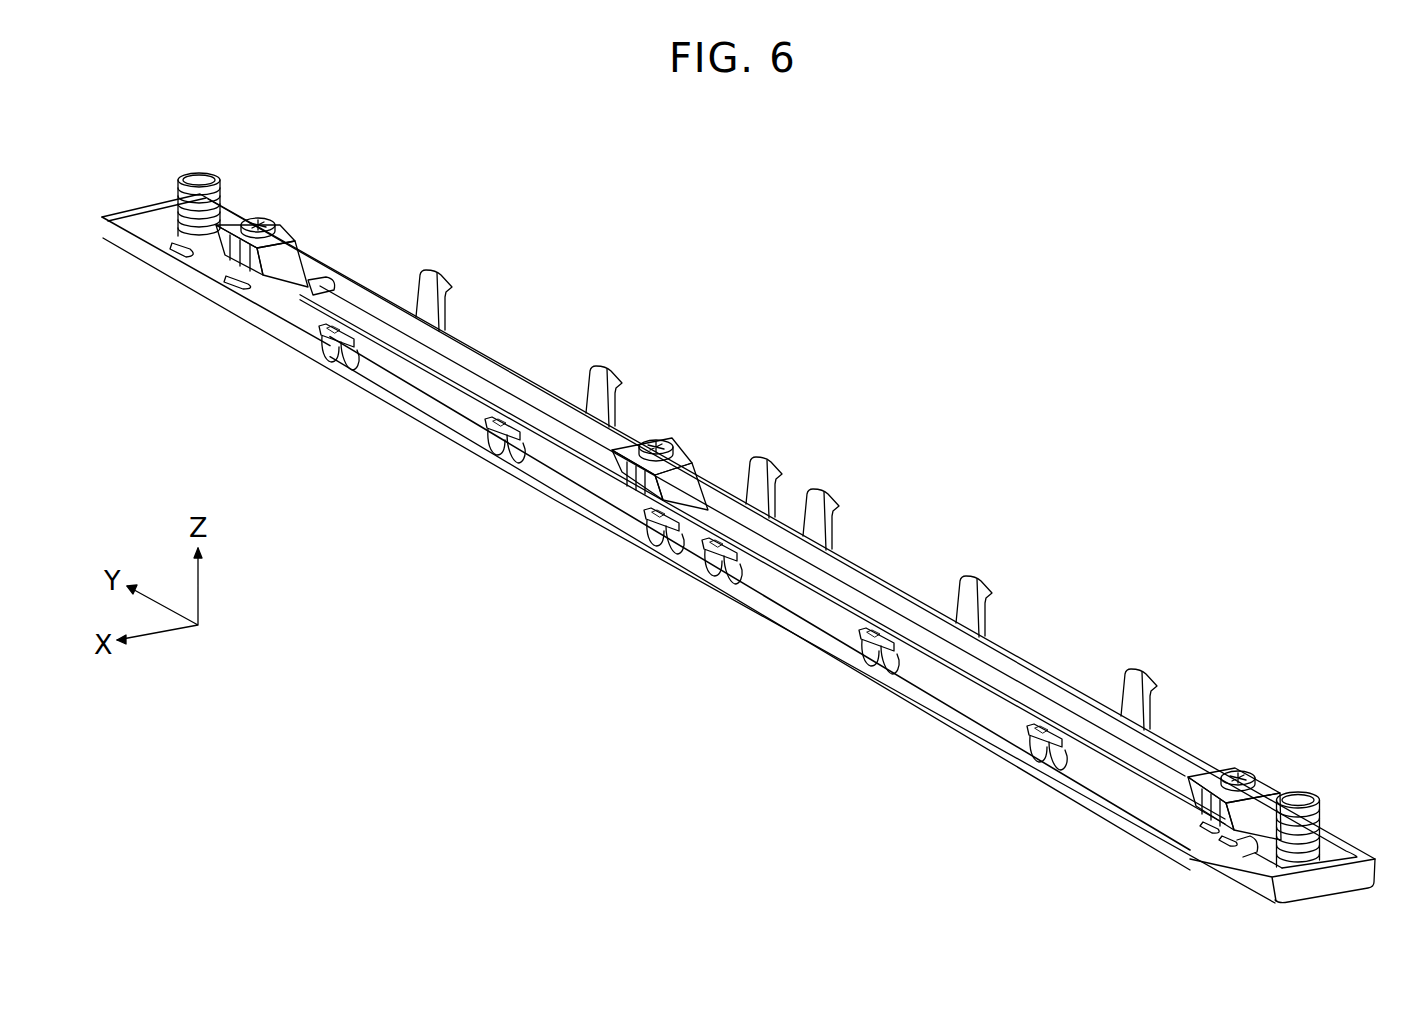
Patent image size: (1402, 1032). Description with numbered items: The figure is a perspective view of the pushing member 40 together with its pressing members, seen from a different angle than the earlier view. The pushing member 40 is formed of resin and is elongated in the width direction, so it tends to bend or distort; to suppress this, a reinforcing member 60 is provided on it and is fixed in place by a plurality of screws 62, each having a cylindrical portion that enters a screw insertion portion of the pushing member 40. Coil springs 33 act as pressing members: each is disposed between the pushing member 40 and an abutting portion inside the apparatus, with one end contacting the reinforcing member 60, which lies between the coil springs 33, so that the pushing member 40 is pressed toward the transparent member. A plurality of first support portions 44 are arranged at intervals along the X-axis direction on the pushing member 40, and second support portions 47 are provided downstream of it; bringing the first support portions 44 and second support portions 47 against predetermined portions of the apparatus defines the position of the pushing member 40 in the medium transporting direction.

The pushing member 40 is at (131, 208).
The coil spring 33 is at (203, 173).
The screw 62 is at (258, 215).
The second support portion 47 is at (433, 268).
The reinforcing member 60 is at (738, 527).
The first support portion 44 is at (330, 370).